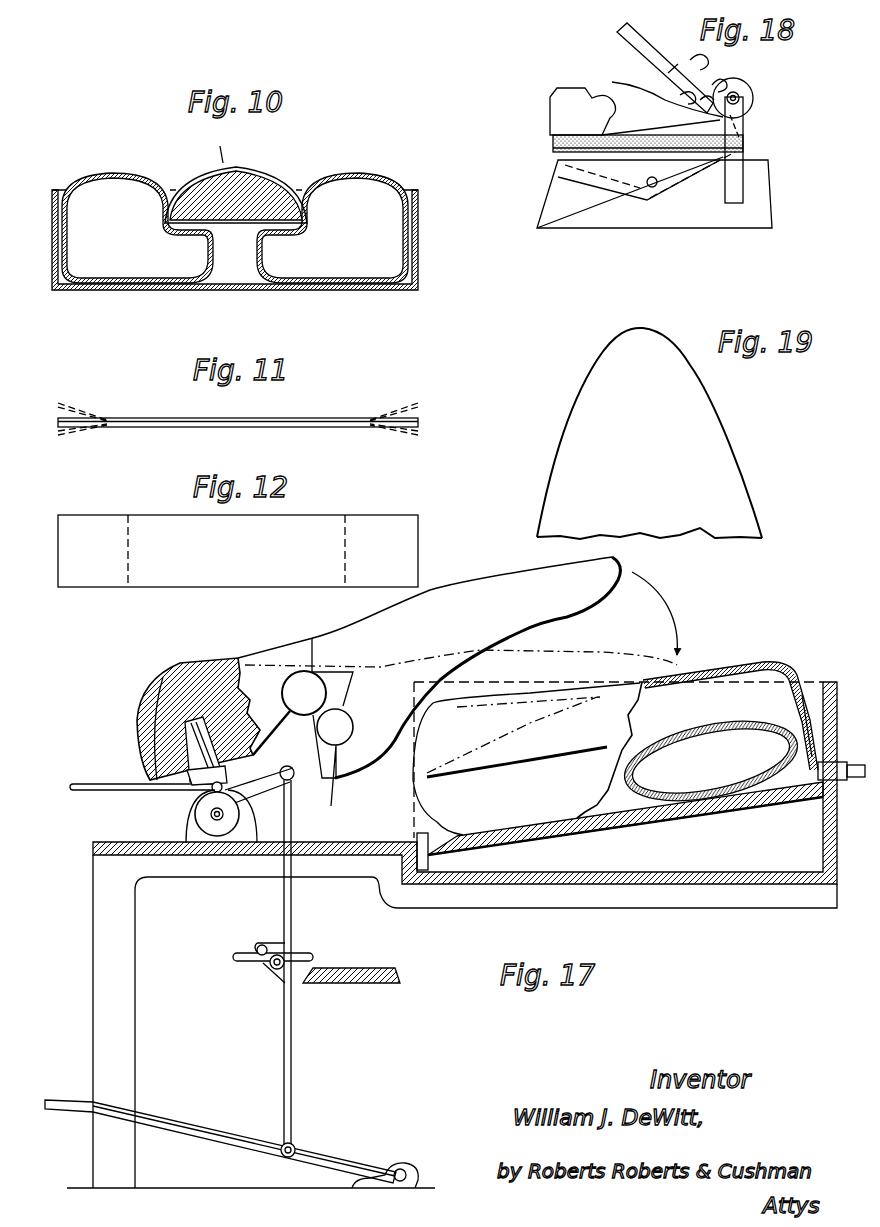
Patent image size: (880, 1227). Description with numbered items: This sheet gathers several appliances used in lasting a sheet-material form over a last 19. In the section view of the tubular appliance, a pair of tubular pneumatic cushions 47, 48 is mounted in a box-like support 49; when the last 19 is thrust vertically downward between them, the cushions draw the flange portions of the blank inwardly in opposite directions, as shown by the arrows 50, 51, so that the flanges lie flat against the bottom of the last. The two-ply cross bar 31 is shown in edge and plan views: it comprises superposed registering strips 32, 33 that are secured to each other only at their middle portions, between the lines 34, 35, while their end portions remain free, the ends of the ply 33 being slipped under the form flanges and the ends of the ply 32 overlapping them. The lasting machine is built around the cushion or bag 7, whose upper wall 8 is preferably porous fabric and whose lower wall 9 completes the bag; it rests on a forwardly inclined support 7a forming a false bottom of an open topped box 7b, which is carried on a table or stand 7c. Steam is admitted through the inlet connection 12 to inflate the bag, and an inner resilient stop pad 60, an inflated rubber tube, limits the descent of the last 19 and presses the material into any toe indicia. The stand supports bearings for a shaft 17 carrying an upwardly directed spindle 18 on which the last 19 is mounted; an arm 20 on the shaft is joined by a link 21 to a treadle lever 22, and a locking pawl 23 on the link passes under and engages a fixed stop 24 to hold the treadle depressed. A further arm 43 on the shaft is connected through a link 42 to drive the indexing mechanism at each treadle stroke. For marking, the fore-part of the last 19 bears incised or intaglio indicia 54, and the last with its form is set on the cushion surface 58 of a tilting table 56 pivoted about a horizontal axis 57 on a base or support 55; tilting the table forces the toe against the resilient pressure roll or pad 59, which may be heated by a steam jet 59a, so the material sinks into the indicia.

In FIG. 10, the tubular pneumatic cushion 47 is at (120, 173).
In FIG. 10, the tubular pneumatic cushion 48 is at (352, 175).
In FIG. 10, the box-like support 49 is at (418, 245).
In FIG. 10, the last 19 is at (250, 188).
In FIG. 19, the last 19 is at (727, 490).
In FIG. 17, the last 19 is at (220, 672).
In FIG. 10, the arrow 50 is at (196, 240).
In FIG. 10, the arrow 51 is at (275, 241).
In FIG. 18, the base or support 55 is at (668, 220).
In FIG. 18, the tilting table 56 is at (558, 168).
In FIG. 18, the horizontal axis 57 is at (658, 185).
In FIG. 18, the cushion surface 58 is at (553, 143).
In FIG. 18, the resilient pressure roll or pad 59 is at (747, 97).
In FIG. 18, the steam jet 59a is at (715, 108).
In FIG. 11, the strip 31 is at (298, 412).
In FIG. 12, the strip 31 is at (308, 506).
In FIG. 11, the strip 32 is at (147, 418).
In FIG. 11, the strip 33 is at (186, 428).
In FIG. 12, the line 34 is at (130, 565).
In FIG. 12, the line 35 is at (343, 543).
In FIG. 19, the incised or intaglio indicia 54 is at (700, 408).
In FIG. 17, the cushion or bag 7 is at (790, 687).
In FIG. 17, the forwardly inclined support 7a is at (725, 808).
In FIG. 17, the open topped box 7b is at (667, 867).
In FIG. 17, the table or stand 7c is at (369, 843).
In FIG. 17, the upper wall 8 is at (723, 670).
In FIG. 17, the lower wall 9 is at (580, 803).
In FIG. 17, the inlet connection 12 is at (857, 760).
In FIG. 17, the shaft 17 is at (204, 822).
In FIG. 17, the spindle 18 is at (147, 752).
In FIG. 17, the arm 20 is at (300, 773).
In FIG. 17, the link 21 is at (290, 820).
In FIG. 17, the treadle lever 22 is at (213, 1132).
In FIG. 17, the locking pawl 23 is at (300, 956).
In FIG. 17, the fixed stop 24 is at (368, 968).
In FIG. 17, the link 42 is at (80, 783).
In FIG. 17, the arm 43 is at (212, 788).
In FIG. 17, the inner resilient stop pad 60 is at (710, 727).